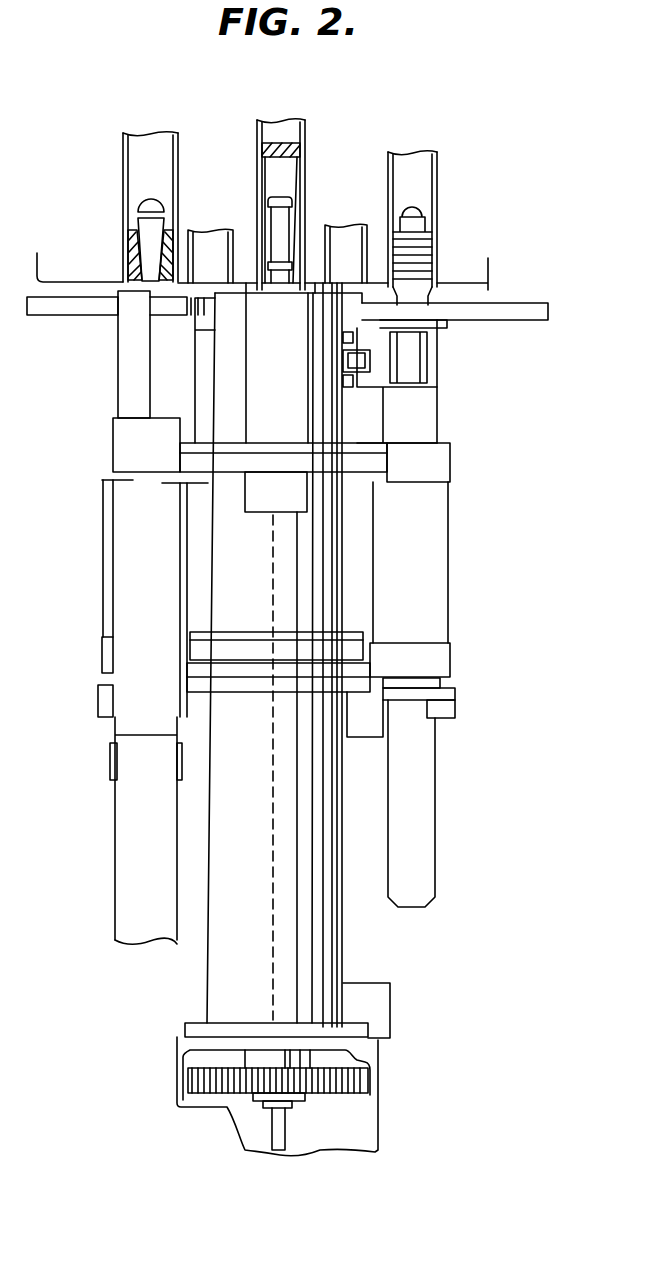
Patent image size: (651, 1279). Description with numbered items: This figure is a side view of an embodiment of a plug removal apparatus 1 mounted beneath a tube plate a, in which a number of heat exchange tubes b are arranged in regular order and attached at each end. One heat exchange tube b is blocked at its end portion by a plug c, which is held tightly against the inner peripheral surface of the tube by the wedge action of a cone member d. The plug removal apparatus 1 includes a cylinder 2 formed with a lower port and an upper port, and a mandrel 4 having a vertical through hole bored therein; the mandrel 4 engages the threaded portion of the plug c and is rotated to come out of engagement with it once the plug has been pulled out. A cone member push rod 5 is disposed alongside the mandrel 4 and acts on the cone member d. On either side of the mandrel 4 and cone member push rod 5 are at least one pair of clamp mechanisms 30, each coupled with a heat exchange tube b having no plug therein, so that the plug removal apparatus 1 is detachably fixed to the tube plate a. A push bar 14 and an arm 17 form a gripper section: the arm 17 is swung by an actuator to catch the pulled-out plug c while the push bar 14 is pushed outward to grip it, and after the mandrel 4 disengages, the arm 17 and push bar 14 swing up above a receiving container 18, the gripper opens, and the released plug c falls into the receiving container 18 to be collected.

The plug removal apparatus 1 is at (220, 597).
The cylinder 2 is at (328, 939).
The mandrel 4 is at (287, 277).
The cone member push rod 5 is at (273, 225).
The push bar 14 is at (360, 362).
The arm 17 is at (412, 352).
The receiving container 18 is at (125, 530).
The clamp mechanism 30 is at (130, 245).
The tube plate a is at (480, 265).
The heat exchange tube b is at (123, 147).
The plug c is at (263, 150).
The cone member d is at (292, 178).